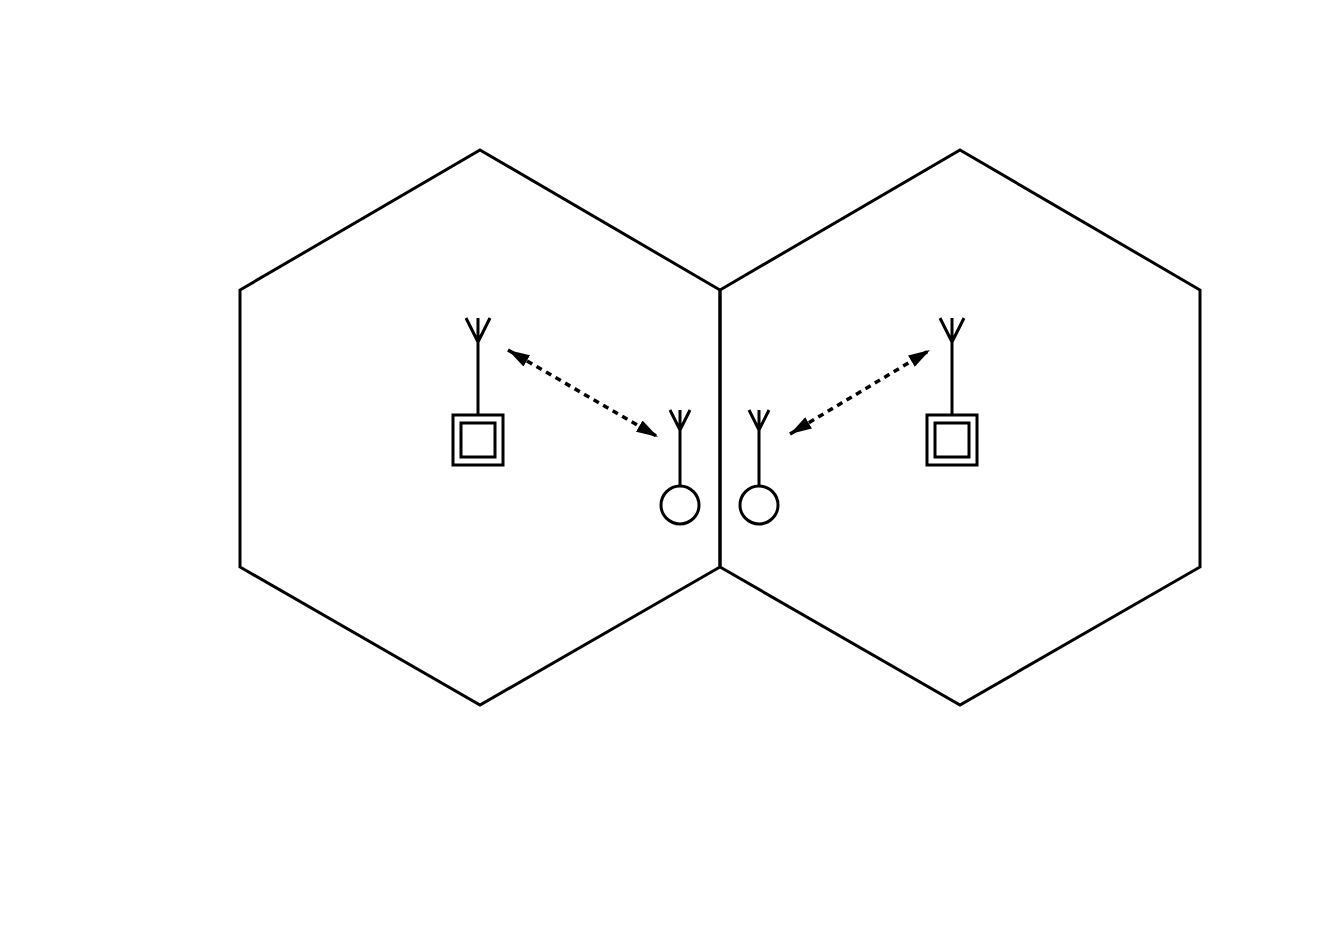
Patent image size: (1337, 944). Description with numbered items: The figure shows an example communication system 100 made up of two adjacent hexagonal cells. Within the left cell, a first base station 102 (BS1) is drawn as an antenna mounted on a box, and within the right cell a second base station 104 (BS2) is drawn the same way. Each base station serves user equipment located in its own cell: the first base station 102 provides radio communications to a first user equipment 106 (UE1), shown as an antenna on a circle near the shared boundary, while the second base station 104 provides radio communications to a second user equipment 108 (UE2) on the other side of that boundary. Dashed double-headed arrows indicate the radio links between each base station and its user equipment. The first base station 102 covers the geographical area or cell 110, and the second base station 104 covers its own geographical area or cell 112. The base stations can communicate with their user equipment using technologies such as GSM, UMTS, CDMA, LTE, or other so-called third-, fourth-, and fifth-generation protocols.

The communication system 100 is at (728, 88).
The first base station 102 is at (448, 445).
The second base station 104 is at (980, 445).
The first user equipment 106 is at (660, 497).
The second user equipment 108 is at (780, 497).
The cell 110 is at (238, 380).
The cell 112 is at (1202, 377).